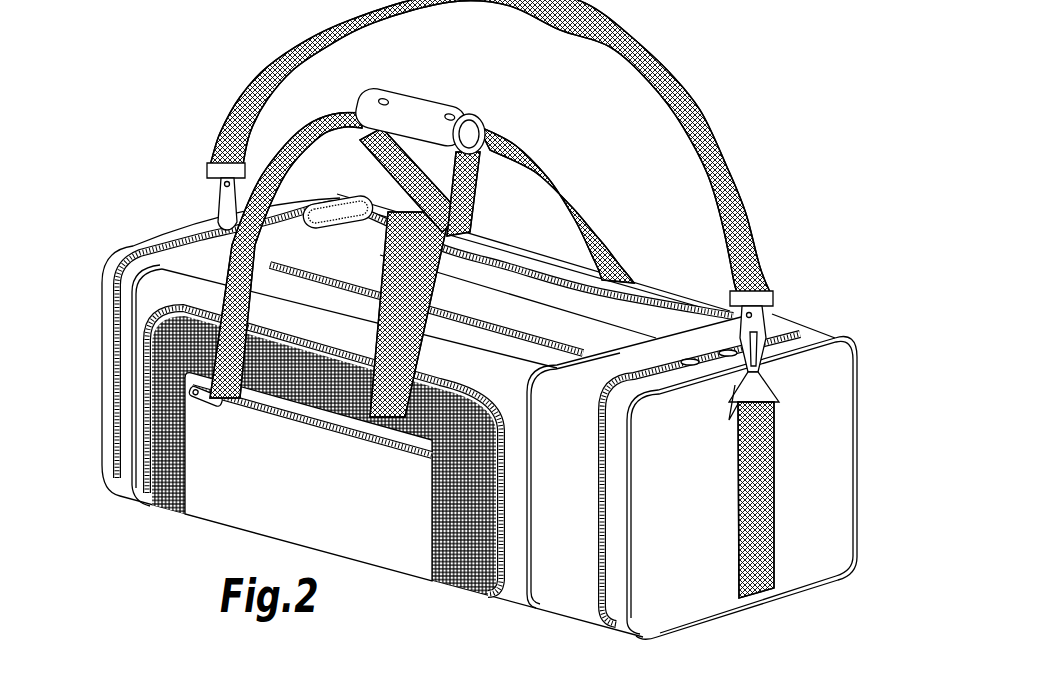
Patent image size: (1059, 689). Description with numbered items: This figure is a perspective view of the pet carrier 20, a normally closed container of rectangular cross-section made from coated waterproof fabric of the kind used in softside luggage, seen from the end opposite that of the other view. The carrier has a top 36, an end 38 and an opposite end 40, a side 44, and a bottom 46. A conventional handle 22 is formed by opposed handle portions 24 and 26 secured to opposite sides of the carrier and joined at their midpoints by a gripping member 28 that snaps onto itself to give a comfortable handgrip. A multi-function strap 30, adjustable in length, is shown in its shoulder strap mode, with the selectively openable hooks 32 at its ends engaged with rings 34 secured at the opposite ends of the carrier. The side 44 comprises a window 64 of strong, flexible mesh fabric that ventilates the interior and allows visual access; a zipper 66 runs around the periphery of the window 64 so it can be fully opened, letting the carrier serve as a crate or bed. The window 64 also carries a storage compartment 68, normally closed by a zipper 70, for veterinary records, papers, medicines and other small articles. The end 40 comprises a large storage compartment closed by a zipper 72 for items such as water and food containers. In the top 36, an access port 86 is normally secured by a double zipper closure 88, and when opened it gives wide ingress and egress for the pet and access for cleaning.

The pet carrier 20 is at (127, 245).
The handle 22 is at (472, 153).
The handle portion 24 is at (543, 158).
The handle portion 26 is at (318, 115).
The gripping member 28 is at (430, 102).
The multi-function strap 30 is at (264, 78).
The hook 32 is at (220, 205).
The ring 34 is at (775, 386).
The top 36 is at (450, 298).
The end 38 is at (104, 305).
The end 40 is at (812, 523).
The side 44 is at (222, 504).
The bottom 46 is at (360, 558).
The window 64 is at (146, 452).
The zipper 66 is at (495, 490).
The storage compartment 68 is at (297, 493).
The zipper 70 is at (255, 420).
The zipper 72 is at (598, 453).
The access port 86 is at (505, 280).
The double zipper closure 88 is at (365, 203).